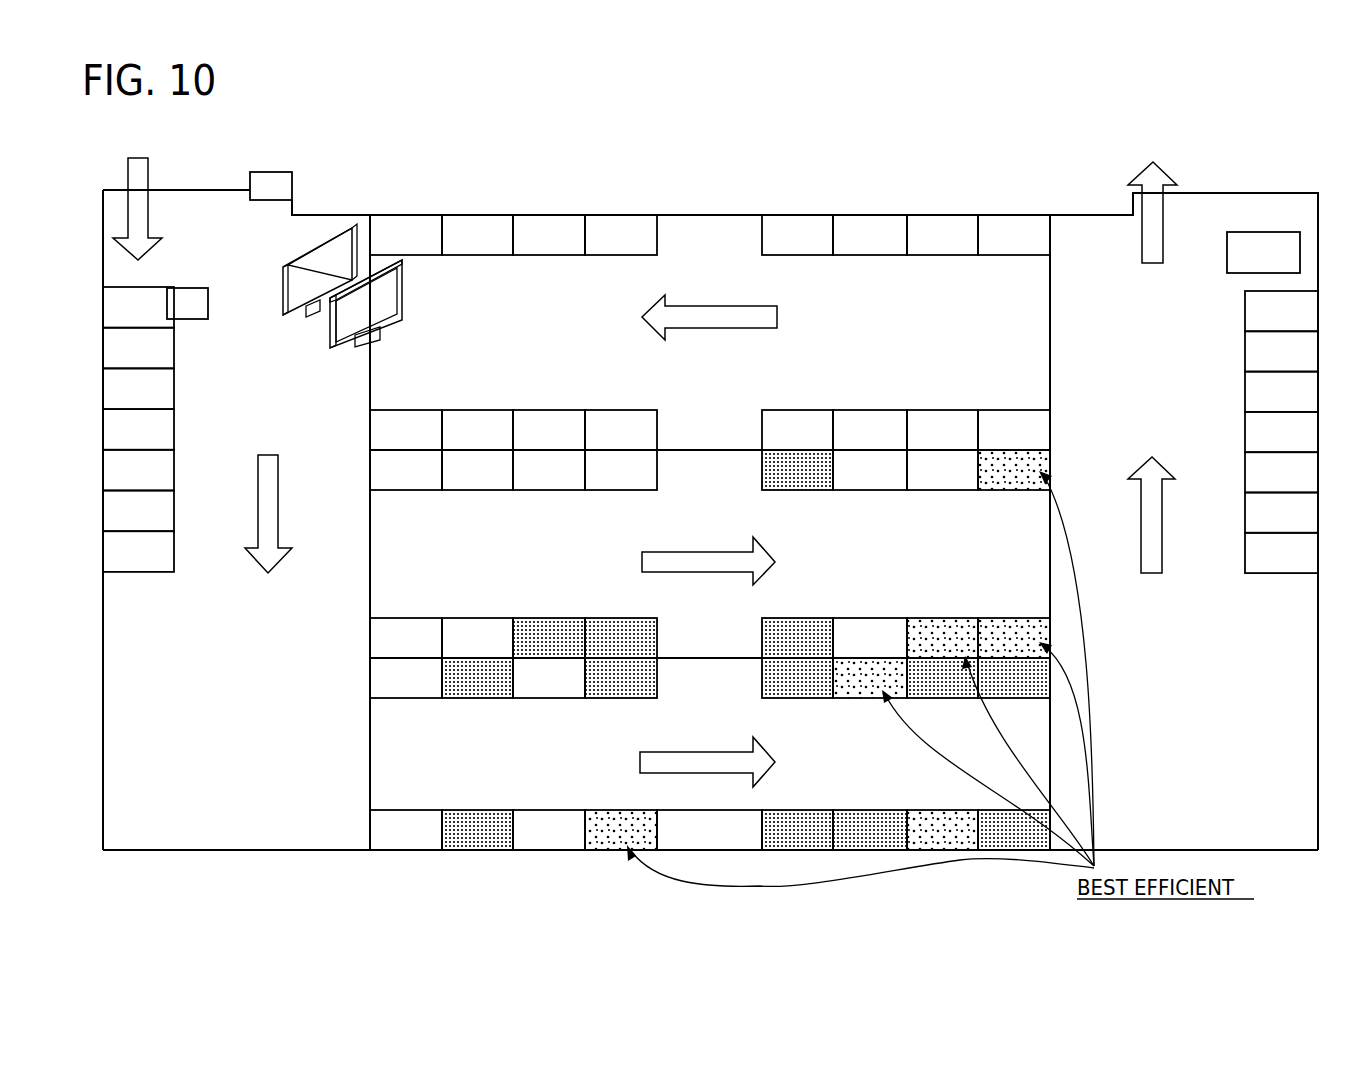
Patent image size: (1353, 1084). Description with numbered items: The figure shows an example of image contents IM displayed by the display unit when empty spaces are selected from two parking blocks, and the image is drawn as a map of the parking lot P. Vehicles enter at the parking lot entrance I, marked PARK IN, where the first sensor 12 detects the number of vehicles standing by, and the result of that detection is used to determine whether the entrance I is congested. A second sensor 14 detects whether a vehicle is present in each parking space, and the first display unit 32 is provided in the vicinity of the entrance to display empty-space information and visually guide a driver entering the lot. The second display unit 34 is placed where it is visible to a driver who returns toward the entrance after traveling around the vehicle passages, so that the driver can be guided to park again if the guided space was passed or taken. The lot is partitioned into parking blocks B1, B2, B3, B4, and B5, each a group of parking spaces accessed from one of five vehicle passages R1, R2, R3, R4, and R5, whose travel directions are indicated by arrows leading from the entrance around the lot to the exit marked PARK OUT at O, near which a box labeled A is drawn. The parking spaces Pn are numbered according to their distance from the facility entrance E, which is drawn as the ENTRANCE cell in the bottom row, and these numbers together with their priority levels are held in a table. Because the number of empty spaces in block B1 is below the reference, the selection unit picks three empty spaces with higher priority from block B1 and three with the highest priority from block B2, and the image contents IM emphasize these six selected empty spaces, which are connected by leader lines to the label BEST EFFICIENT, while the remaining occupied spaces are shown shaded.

The parking lot P is at (1003, 181).
The parking lot entrance I is at (203, 190).
The exit (park out) O is at (1245, 192).
The first sensor 12 is at (292, 186).
The second sensor 14 is at (208, 304).
The first display unit 32 is at (315, 238).
The second display unit 34 is at (405, 290).
The administration box A is at (1263, 252).
The parking block B1 is at (371, 758).
The parking block B2 is at (371, 556).
The parking block B3 is at (371, 360).
The parking block B4 is at (1244, 304).
The parking block B5 is at (175, 328).
The vehicle passage R1 is at (715, 744).
The vehicle passage R2 is at (715, 542).
The vehicle passage R3 is at (715, 298).
The vehicle passage R4 is at (1118, 500).
The vehicle passage R5 is at (248, 486).
The parking space Pn is at (548, 810).
The facility entrance E is at (735, 811).
The image contents IM is at (510, 866).